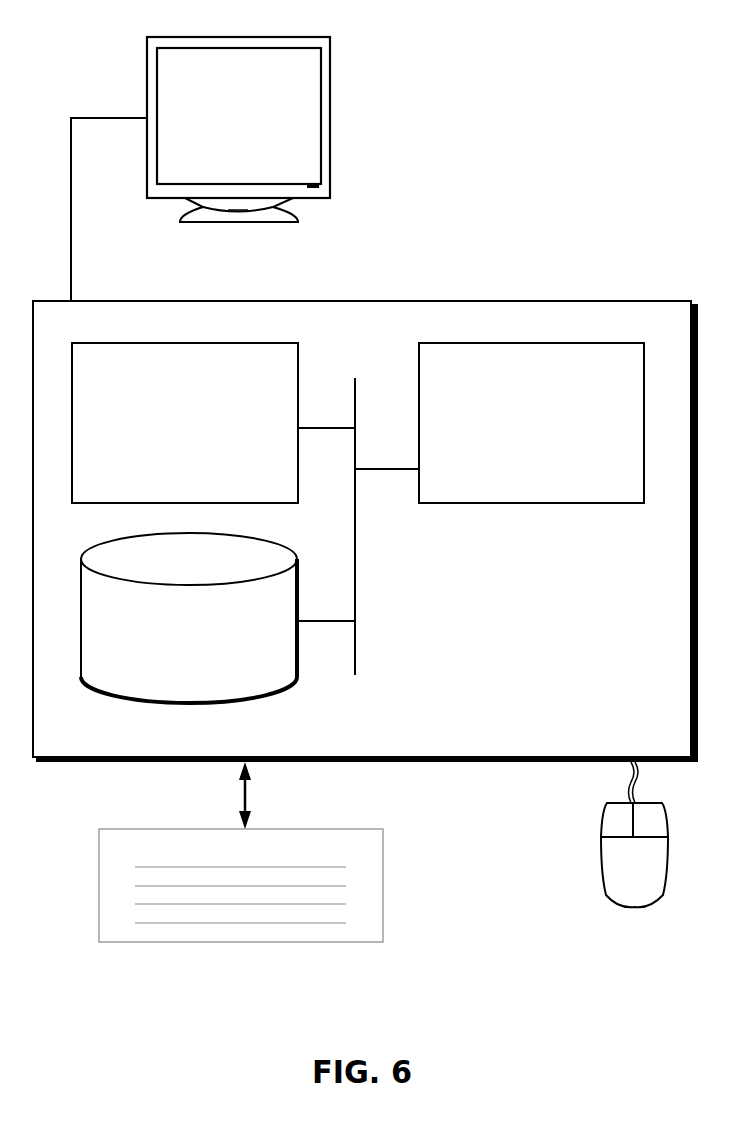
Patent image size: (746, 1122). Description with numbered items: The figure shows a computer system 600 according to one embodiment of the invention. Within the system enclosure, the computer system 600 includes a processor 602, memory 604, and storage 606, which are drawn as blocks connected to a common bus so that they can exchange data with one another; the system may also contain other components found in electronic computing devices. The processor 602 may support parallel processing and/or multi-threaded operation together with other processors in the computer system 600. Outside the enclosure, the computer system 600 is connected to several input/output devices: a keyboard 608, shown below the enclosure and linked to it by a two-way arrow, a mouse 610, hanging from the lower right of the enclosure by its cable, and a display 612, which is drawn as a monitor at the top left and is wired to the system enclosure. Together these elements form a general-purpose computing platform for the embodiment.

The computer system 600 is at (409, 270).
The processor 602 is at (557, 436).
The memory 604 is at (207, 436).
The storage 606 is at (214, 646).
The keyboard 608 is at (241, 869).
The mouse 610 is at (653, 879).
The display 612 is at (200, 169).